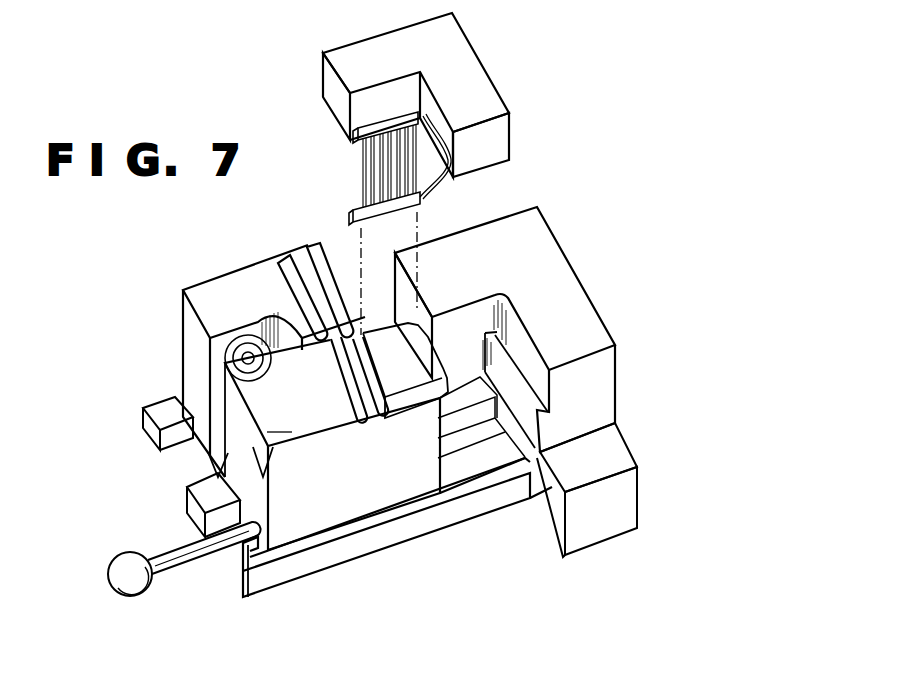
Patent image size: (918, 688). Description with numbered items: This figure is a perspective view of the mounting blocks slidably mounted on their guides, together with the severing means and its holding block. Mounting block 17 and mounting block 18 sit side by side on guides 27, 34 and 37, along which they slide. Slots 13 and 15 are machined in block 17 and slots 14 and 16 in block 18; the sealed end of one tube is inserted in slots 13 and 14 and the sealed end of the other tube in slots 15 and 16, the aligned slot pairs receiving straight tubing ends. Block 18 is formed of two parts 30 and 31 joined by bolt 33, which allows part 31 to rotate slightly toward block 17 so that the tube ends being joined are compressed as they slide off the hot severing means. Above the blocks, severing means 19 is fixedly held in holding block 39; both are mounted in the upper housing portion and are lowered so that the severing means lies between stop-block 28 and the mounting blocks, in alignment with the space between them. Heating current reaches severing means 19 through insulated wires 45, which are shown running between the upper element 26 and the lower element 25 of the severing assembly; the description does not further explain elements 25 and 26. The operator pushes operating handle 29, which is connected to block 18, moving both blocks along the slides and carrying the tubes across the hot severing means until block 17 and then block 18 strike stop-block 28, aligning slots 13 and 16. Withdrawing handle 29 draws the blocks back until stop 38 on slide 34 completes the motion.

The slot 13 is at (305, 242).
The slot 14 is at (388, 414).
The slot 15 is at (282, 258).
The slot 16 is at (360, 422).
The mounting block 17 is at (180, 348).
The mounting block 18 is at (282, 420).
The severing means 19 is at (389, 223).
The lower cable connector strip 25 is at (413, 209).
The upper cable connector strip 26 is at (356, 154).
The guide 27 is at (143, 440).
The stop-block 28 is at (572, 290).
The operating handle 29 is at (135, 596).
The part of block 18 30 is at (290, 530).
The part of block 18 31 is at (228, 440).
The bolt 33 is at (262, 368).
The guide 34 is at (345, 548).
The guide 37 is at (187, 515).
The stop 38 is at (240, 565).
The holding block 39 is at (462, 48).
The insulated wires 45 is at (440, 170).